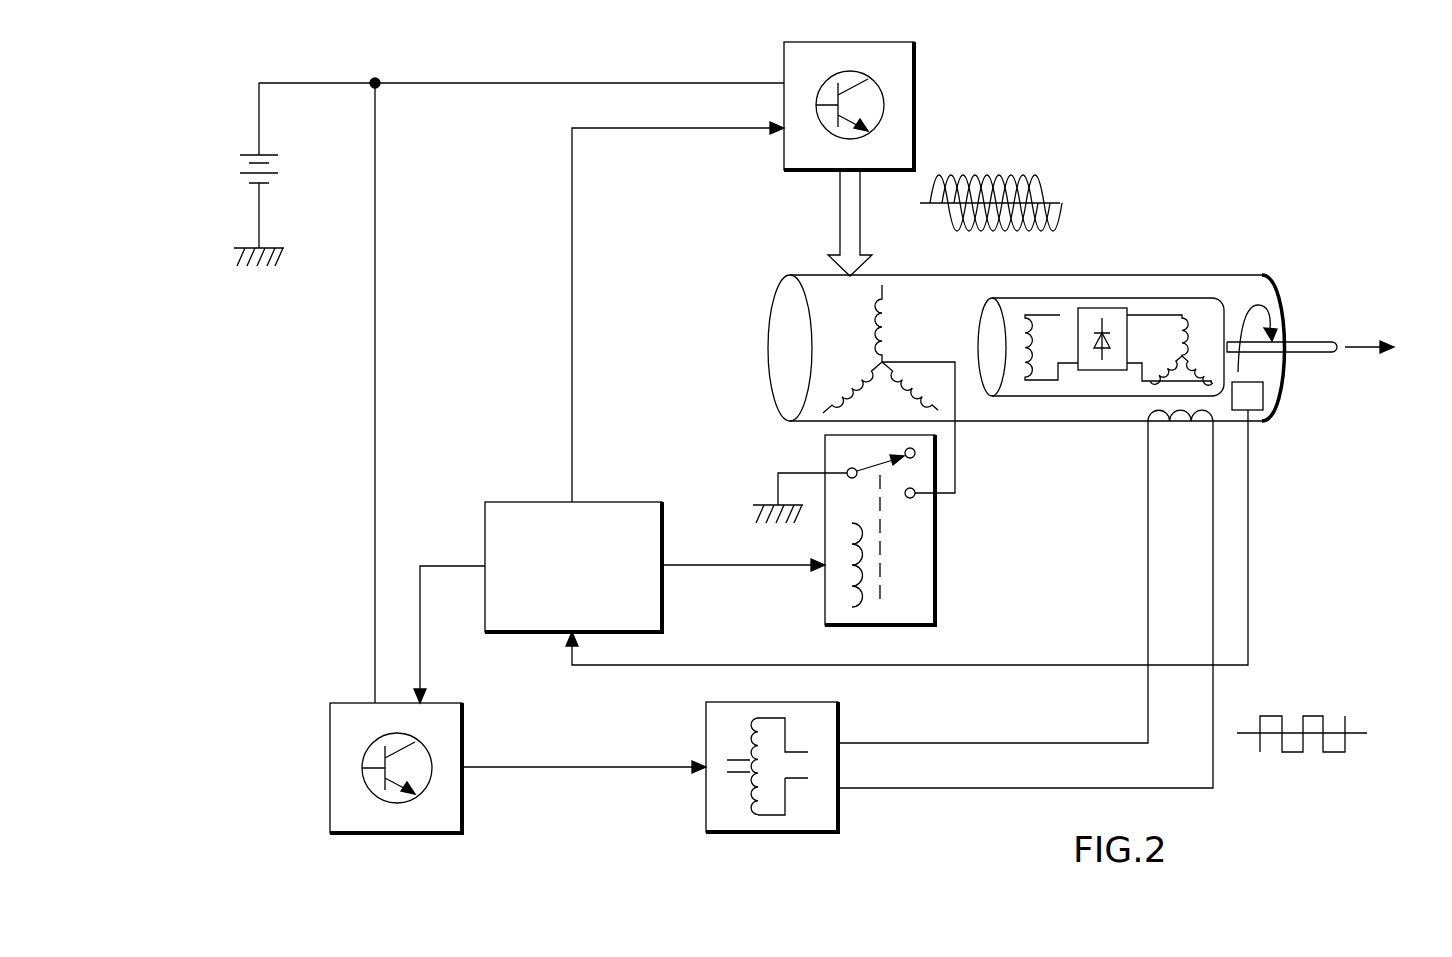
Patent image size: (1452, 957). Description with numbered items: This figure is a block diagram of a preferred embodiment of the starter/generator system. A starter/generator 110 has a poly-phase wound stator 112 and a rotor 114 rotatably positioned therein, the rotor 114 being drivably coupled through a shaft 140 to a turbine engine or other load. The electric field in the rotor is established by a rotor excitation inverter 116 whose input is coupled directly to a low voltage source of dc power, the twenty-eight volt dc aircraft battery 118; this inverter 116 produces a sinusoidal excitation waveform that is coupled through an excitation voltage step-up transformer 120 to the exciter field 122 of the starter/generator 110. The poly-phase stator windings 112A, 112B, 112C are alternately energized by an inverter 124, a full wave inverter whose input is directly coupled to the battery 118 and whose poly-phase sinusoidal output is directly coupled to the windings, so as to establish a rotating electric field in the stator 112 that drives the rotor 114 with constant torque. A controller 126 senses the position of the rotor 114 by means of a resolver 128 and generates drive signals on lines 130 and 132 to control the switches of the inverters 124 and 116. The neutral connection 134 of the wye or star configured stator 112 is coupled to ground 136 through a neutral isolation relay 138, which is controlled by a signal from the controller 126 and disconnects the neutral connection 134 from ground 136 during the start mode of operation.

The starter/generator 110 is at (1078, 272).
The poly-phase wound stator 112 is at (819, 332).
The stator winding 112A is at (882, 322).
The stator winding 112B is at (805, 396).
The stator winding 112C is at (852, 383).
The rotor 114 is at (1203, 305).
The rotor excitation inverter 116 is at (330, 805).
The aircraft battery 118 is at (250, 153).
The excitation voltage step-up transformer 120 is at (822, 833).
The exciter field 122 is at (1188, 410).
The inverter 124 is at (916, 62).
The controller 126 is at (550, 500).
The resolver 128 is at (1253, 393).
The line 130 is at (633, 128).
The line 132 is at (422, 678).
The neutral connection 134 is at (955, 458).
The ground 136 is at (768, 503).
The neutral isolation relay 138 is at (922, 585).
The shaft 140 is at (1312, 337).